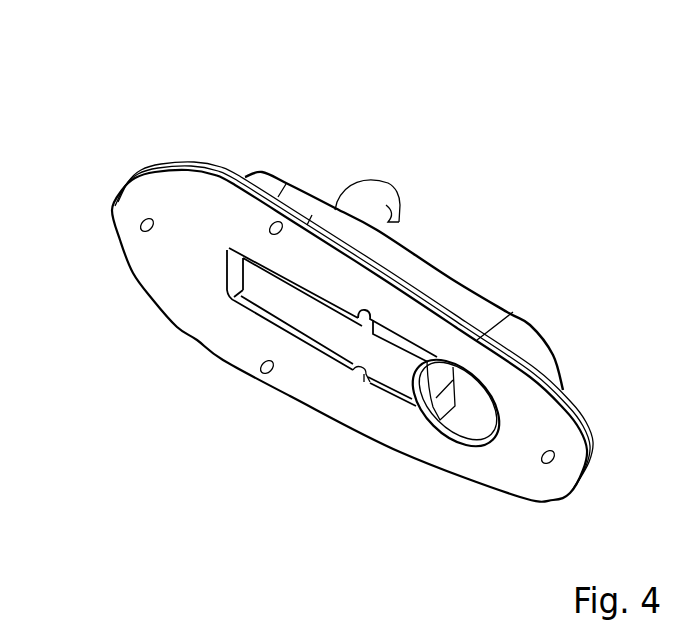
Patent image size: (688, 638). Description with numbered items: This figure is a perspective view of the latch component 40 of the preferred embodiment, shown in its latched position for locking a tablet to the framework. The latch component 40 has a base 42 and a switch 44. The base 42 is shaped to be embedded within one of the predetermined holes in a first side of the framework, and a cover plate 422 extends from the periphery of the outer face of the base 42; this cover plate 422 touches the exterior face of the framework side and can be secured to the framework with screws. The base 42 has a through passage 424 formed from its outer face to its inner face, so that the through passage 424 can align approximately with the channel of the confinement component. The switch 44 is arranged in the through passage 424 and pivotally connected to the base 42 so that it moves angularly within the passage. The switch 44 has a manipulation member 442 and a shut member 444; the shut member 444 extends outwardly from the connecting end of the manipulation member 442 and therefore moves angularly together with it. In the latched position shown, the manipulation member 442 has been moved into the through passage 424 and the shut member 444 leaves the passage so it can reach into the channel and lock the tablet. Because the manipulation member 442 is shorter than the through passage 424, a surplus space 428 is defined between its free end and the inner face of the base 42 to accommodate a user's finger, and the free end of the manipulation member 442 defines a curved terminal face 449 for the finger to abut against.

The latch component 40 is at (52, 540).
The base 42 is at (276, 174).
The switch 44 is at (362, 178).
The cover plate 422 is at (174, 181).
The through passage 424 is at (355, 388).
The surplus space 428 is at (486, 406).
The manipulation member 442 is at (273, 302).
The shut member 444 is at (384, 199).
The terminal face 449 is at (430, 400).